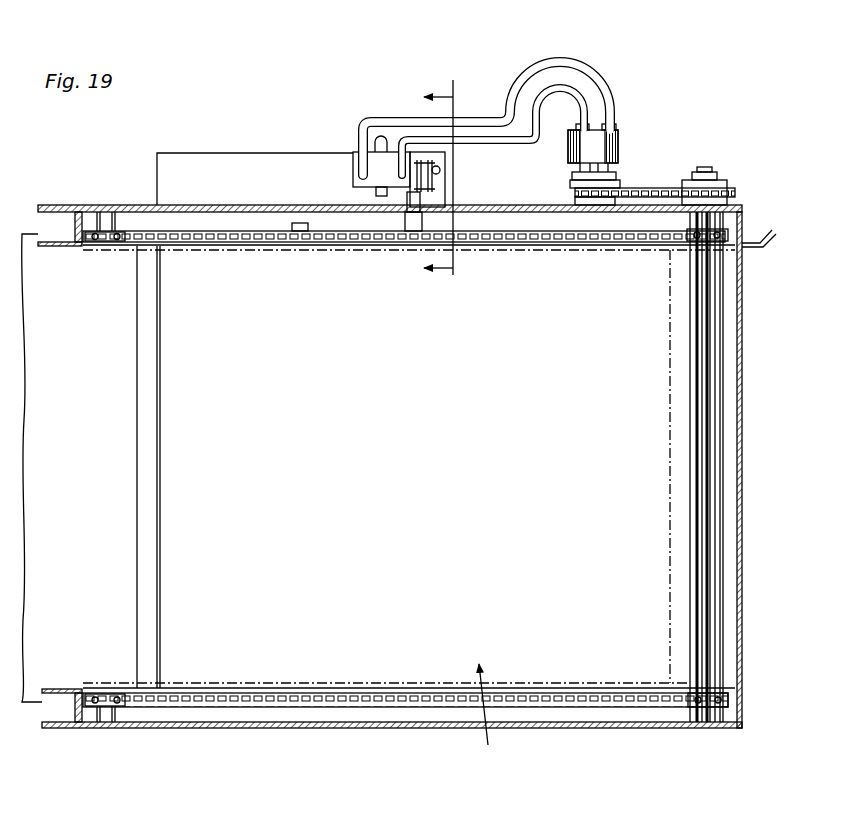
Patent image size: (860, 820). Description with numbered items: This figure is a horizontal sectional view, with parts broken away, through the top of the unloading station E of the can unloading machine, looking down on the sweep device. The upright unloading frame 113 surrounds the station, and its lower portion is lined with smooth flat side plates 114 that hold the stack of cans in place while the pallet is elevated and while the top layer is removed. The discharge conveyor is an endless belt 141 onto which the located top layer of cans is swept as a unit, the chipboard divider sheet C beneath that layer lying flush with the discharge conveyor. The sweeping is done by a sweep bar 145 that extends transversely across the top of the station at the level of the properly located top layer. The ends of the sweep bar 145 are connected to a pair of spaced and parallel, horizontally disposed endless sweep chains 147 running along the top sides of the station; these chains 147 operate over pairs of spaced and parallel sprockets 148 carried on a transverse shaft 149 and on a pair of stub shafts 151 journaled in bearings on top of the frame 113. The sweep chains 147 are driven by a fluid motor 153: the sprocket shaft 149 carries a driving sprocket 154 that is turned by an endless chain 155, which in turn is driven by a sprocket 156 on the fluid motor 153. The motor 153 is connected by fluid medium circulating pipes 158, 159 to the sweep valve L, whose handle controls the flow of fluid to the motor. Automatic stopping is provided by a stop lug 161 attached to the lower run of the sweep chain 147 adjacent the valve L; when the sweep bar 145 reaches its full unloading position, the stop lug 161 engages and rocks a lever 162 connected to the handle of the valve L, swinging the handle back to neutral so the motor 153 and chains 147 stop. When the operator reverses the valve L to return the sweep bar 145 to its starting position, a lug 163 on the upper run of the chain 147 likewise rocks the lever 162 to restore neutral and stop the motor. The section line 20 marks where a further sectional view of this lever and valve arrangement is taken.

The unloading frame 113 is at (210, 198).
The side plates 114 is at (560, 246).
The endless belt 141 is at (120, 548).
The sweep bar 145 is at (692, 460).
The sweep chains 147 is at (216, 236).
The sprockets 148 is at (102, 245).
The transverse shaft 149 is at (708, 516).
The stub shafts 151 is at (122, 186).
The fluid motor 153 is at (612, 140).
The driving sprocket 154 is at (722, 186).
The endless chain 155 is at (640, 190).
The sprocket 156 is at (574, 196).
The fluid medium circulating pipe 158 is at (388, 110).
The fluid medium circulating pipe 159 is at (524, 72).
The stop lug 161 is at (298, 222).
The lever 162 is at (438, 183).
The lug 163 is at (432, 208).
The section line 20— 20 is at (457, 180).
The chipboard divider sheet C is at (668, 412).
The unloading station E is at (491, 719).
The sweep valve L is at (356, 181).